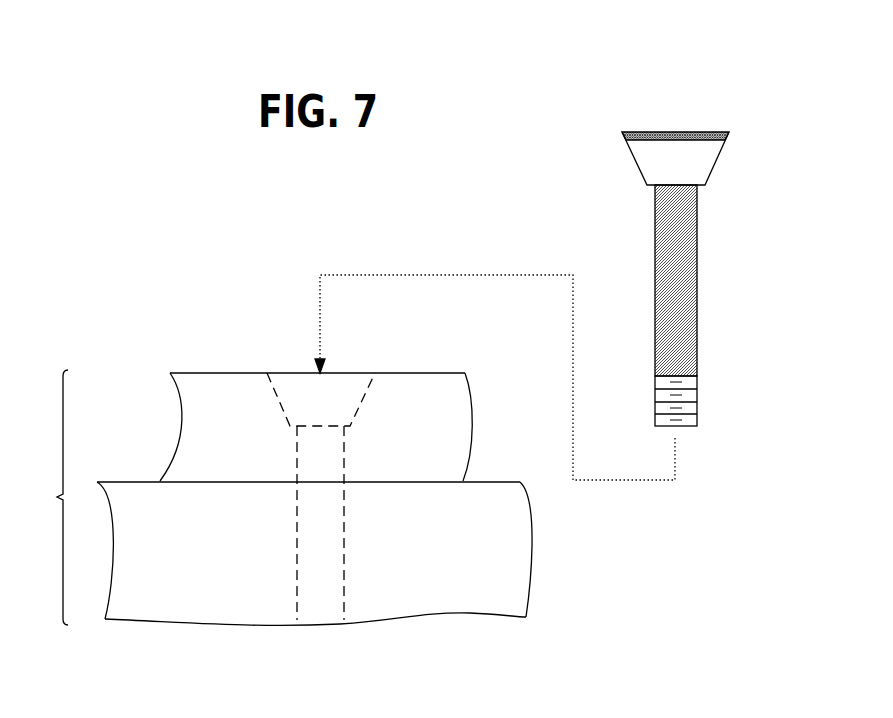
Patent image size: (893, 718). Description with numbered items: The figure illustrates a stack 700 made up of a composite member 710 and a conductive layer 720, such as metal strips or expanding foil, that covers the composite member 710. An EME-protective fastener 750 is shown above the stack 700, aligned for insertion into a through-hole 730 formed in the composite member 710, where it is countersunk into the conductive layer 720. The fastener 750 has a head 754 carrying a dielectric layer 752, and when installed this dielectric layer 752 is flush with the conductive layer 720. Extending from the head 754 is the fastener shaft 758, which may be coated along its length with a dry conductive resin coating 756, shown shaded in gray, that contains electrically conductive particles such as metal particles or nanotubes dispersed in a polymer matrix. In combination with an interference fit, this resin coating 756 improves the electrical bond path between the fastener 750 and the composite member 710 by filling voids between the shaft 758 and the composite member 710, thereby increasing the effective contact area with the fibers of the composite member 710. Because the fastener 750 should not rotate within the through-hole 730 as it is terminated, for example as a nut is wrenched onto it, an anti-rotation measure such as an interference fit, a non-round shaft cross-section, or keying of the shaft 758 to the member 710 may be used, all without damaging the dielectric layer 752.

The stack 700 is at (275, 500).
The composite member 710 is at (207, 622).
The conductive layer 720 is at (220, 372).
The through-hole 730 is at (317, 612).
The EME-protective fastener 750 is at (703, 110).
The dielectric layer 752 is at (645, 132).
The fastener head 754 is at (640, 167).
The dry conductive resin coating 756 is at (688, 280).
The fastener shaft 758 is at (696, 387).